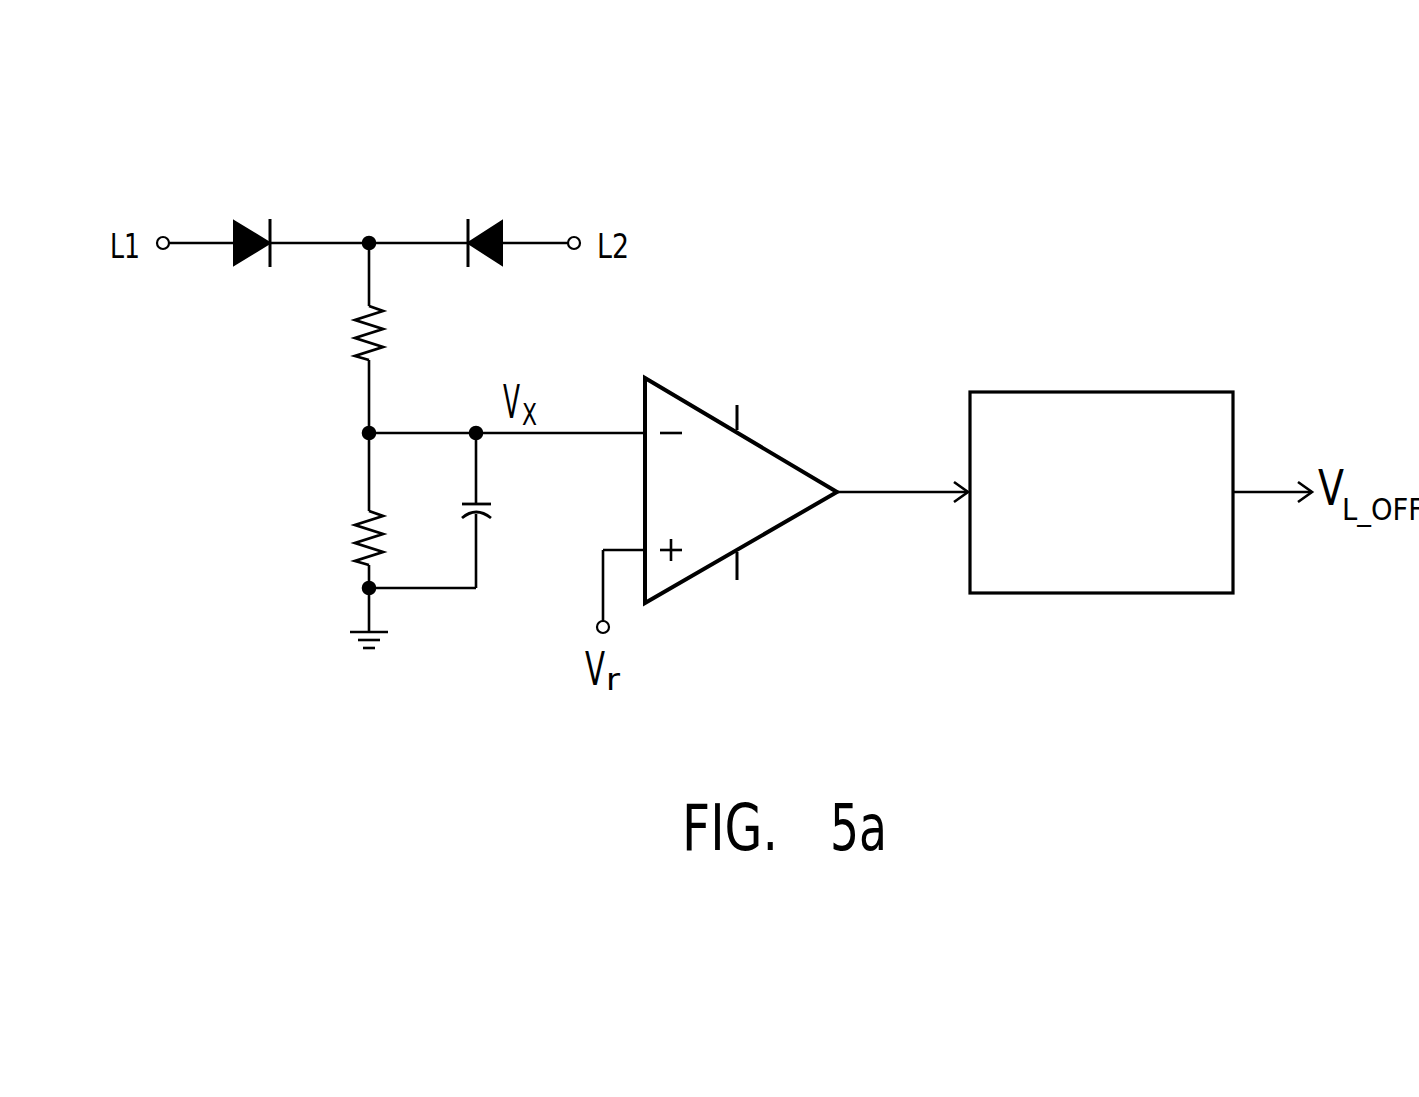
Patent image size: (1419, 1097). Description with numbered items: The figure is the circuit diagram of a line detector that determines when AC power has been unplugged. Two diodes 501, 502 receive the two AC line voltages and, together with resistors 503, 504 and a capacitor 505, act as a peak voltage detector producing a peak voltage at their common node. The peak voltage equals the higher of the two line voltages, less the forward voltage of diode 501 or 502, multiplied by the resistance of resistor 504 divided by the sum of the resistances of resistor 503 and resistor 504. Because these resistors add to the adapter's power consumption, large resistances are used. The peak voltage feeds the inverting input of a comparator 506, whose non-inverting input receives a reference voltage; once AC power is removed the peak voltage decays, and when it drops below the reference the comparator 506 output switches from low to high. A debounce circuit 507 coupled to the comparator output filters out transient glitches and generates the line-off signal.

The diode 501 is at (253, 222).
The diode 502 is at (484, 222).
The resistor 503 is at (355, 330).
The resistor 504 is at (355, 531).
The capacitor 505 is at (490, 510).
The comparator 506 is at (765, 450).
The debounce circuit 507 is at (1103, 392).